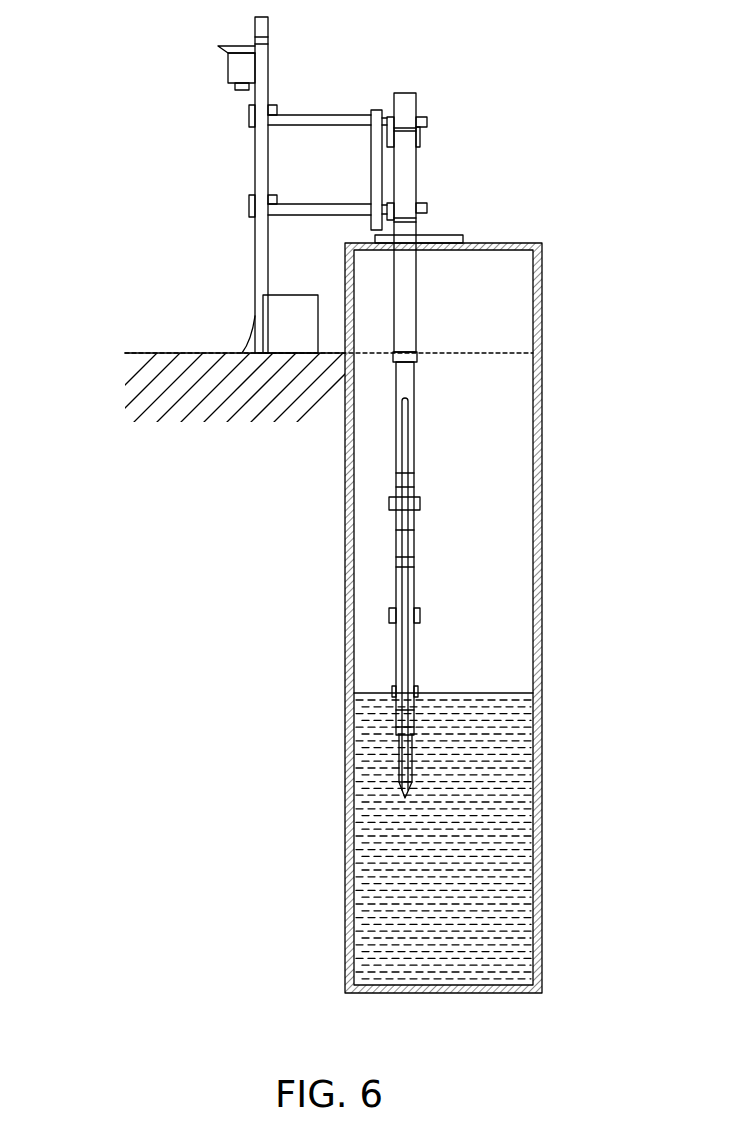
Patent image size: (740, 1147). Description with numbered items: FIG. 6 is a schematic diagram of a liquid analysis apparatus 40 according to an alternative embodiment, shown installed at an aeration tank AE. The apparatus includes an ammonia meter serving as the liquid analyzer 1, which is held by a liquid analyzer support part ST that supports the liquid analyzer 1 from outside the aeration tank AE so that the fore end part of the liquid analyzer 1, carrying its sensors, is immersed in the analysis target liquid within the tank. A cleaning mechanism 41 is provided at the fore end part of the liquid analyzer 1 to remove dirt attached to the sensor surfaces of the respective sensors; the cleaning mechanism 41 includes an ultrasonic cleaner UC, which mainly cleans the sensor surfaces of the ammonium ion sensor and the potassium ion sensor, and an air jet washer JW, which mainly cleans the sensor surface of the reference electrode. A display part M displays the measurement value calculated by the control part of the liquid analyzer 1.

The liquid analysis apparatus 40 is at (148, 124).
The display part M is at (228, 70).
The liquid analyzer support part ST is at (340, 100).
The aeration tank AE is at (548, 430).
The liquid analyzer 1 is at (385, 762).
The cleaning mechanism 41 is at (292, 757).
The air jet washer JW is at (392, 795).
The ultrasonic cleaner UC is at (392, 797).